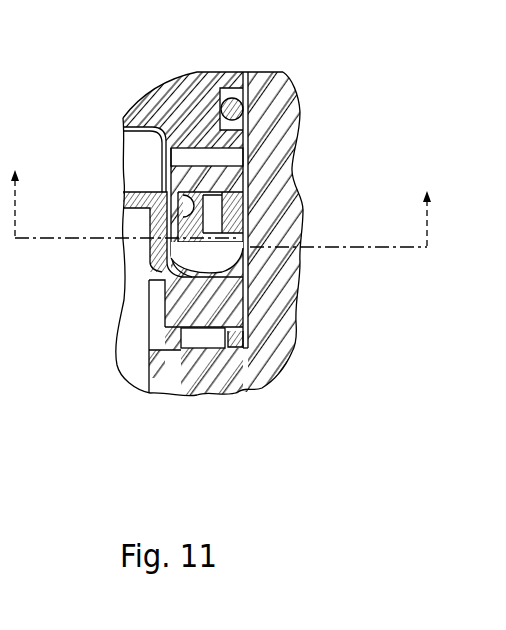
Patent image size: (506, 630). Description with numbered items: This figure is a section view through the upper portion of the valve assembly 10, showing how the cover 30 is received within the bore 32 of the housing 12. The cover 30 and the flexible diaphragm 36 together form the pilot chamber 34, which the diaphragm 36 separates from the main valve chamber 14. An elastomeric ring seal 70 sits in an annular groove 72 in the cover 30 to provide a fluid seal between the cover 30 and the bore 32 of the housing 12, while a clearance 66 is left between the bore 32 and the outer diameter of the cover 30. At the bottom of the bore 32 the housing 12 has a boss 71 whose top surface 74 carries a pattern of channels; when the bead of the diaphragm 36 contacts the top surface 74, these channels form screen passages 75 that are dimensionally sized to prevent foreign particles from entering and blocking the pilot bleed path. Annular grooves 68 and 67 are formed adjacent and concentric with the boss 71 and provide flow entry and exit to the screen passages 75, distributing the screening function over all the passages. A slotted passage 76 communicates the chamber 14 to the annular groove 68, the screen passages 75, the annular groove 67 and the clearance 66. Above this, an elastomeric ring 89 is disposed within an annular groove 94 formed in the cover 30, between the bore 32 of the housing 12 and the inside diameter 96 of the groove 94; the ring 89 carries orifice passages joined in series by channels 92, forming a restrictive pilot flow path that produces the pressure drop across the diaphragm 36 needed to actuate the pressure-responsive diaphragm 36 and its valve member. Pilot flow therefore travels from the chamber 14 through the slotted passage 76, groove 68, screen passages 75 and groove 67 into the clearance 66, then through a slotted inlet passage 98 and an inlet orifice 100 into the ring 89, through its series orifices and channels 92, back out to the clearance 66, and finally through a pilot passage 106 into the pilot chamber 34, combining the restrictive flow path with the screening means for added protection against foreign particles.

The valve assembly 10 is at (222, 199).
The housing 12 is at (283, 70).
The main valve chamber 14 is at (98, 301).
The cover 30 is at (162, 107).
The bore 32 is at (303, 106).
The pilot chamber 34 is at (140, 155).
The flexible diaphragm 36 is at (122, 177).
The clearance 66 is at (249, 150).
The annular groove 67 is at (246, 350).
The annular groove 68 is at (148, 347).
The elastomeric ring seal 70 is at (248, 102).
The boss 71 is at (195, 345).
The annular groove 72 is at (237, 88).
The top surface 74 is at (186, 340).
The screen passages 75 is at (207, 333).
The slotted passage 76 is at (152, 328).
The elastomeric ring 89 is at (230, 205).
The channels 92 is at (206, 194).
The annular groove 94 is at (196, 200).
The inside diameter 96 is at (160, 203).
The slotted inlet passage 98 is at (232, 268).
The inlet orifice 100 is at (214, 212).
The pilot passage 106 is at (190, 160).